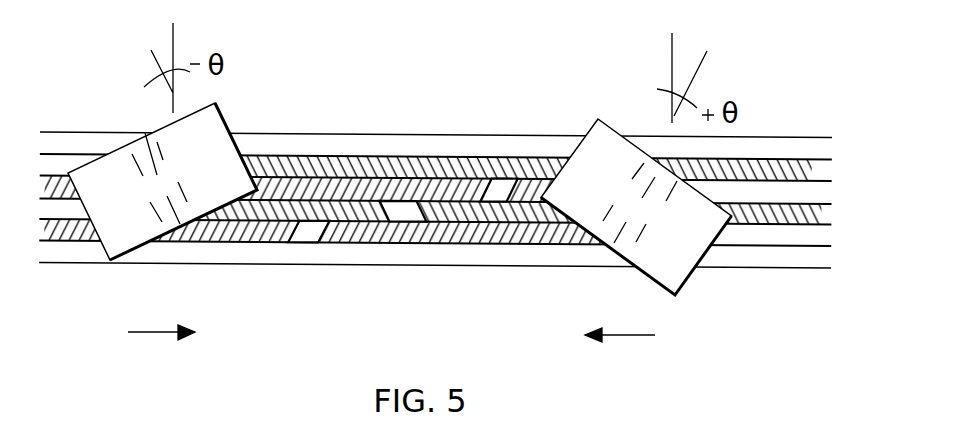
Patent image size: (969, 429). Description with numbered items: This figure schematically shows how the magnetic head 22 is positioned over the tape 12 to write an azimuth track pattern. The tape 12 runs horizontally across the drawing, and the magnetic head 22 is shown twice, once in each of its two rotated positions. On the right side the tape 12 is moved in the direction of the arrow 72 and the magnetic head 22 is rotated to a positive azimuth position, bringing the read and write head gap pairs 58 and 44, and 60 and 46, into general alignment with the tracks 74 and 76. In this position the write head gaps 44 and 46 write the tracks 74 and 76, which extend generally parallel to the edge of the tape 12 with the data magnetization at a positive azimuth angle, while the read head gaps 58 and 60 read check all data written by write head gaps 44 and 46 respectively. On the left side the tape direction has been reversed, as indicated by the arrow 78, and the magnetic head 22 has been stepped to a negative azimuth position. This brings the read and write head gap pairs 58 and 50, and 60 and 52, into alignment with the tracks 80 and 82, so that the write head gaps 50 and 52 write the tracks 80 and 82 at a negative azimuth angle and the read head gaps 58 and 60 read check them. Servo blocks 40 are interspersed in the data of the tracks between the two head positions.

The tape 12 is at (737, 268).
The magnetic head 22 is at (622, 120).
The servo blocks 40 is at (497, 203).
The write head gap 44 is at (678, 199).
The write head gap 46 is at (651, 241).
The write head gap 50 is at (636, 171).
The write head gap 52 is at (610, 207).
The read head gap 58 is at (643, 190).
The read head gap 60 is at (615, 232).
The arrow 72 is at (620, 349).
The track 74 is at (822, 191).
The track 76 is at (830, 242).
The arrow 78 is at (161, 346).
The track 80 is at (820, 170).
The track 82 is at (827, 213).